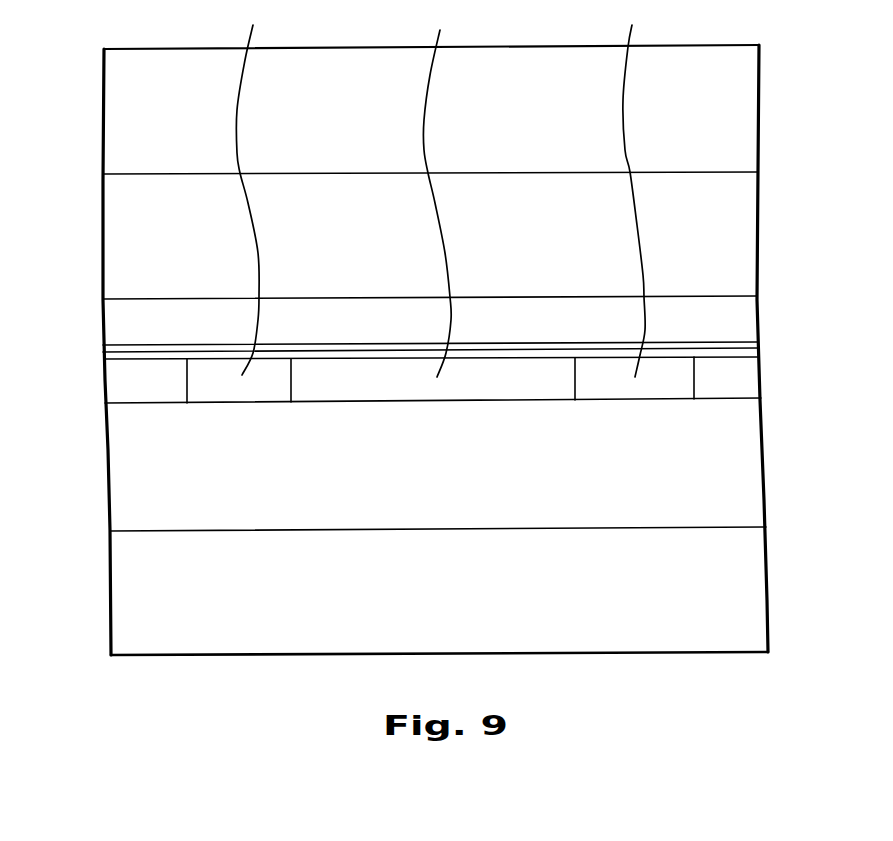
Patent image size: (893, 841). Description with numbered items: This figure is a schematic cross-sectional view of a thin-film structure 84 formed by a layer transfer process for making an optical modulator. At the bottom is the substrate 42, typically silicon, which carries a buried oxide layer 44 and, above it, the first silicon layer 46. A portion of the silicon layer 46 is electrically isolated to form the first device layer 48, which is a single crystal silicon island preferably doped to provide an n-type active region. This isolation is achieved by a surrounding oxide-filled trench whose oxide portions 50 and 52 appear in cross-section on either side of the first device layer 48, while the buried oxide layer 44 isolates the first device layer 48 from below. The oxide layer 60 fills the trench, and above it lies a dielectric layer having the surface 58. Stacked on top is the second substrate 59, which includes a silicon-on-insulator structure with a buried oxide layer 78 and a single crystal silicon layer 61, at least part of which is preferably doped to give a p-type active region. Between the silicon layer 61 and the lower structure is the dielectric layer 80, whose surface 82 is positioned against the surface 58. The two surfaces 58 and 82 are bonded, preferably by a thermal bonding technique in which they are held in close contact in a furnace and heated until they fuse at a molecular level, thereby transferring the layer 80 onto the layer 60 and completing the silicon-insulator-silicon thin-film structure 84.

The thin-film structure 84 is at (83, 555).
The second substrate 59 is at (708, 110).
The buried oxide layer 78 is at (713, 232).
The silicon layer 61 is at (728, 322).
The dielectric layer 80 is at (750, 343).
The surface 58 is at (128, 350).
The surface 82 is at (118, 354).
The oxide layer 60 is at (753, 352).
The first silicon layer 46 is at (733, 378).
The buried oxide layer 44 is at (720, 459).
The substrate 42 is at (707, 588).
The oxide portion 50 is at (252, 187).
The first device layer 48 is at (439, 190).
The oxide portion 52 is at (634, 188).